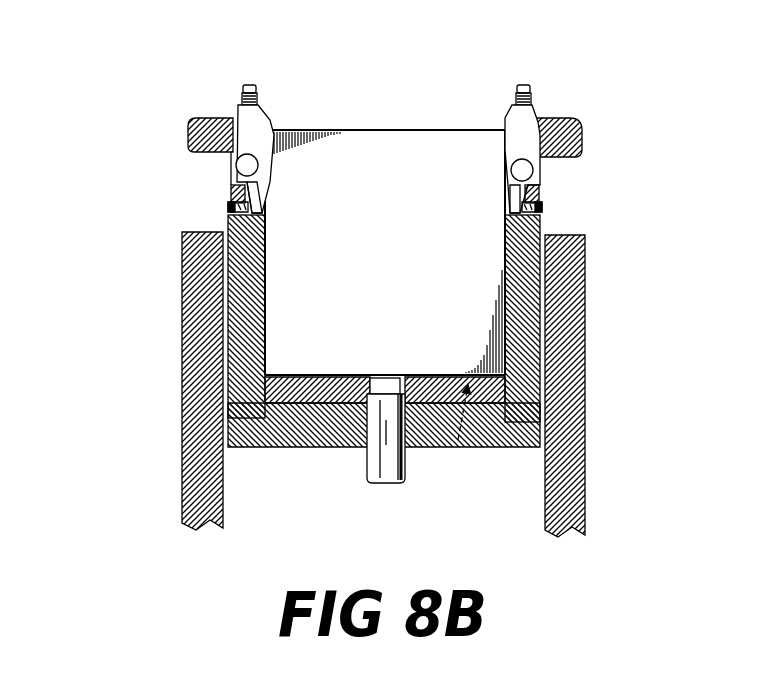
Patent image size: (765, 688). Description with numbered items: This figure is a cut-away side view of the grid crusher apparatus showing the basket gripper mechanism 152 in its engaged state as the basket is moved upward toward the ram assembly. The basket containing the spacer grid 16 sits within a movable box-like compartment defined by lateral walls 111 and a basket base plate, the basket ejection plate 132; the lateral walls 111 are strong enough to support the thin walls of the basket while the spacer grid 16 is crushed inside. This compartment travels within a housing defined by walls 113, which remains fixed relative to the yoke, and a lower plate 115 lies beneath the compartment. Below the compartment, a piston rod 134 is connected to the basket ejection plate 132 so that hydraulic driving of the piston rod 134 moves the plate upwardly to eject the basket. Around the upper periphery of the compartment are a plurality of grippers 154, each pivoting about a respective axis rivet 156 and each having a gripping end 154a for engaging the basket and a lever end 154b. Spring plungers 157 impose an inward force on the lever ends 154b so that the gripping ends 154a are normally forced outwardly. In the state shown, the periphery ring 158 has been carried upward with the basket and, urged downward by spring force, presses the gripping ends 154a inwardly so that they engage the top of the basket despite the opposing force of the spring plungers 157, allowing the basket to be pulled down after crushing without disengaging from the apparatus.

The basket gripper mechanism 152 is at (157, 44).
The spacer grid 16 is at (423, 150).
The lateral wall 111 is at (245, 372).
The housing wall 113 is at (200, 303).
The base plate 115 is at (327, 430).
The piston rod 134 is at (385, 478).
The basket ejection plate 132 is at (462, 442).
The periphery ring 158 is at (200, 118).
The gripper 154 is at (262, 118).
The gripping end 154a is at (512, 112).
The lever end 154b is at (268, 210).
The axis rivet 156 is at (258, 160).
The spring plunger 157 is at (230, 206).